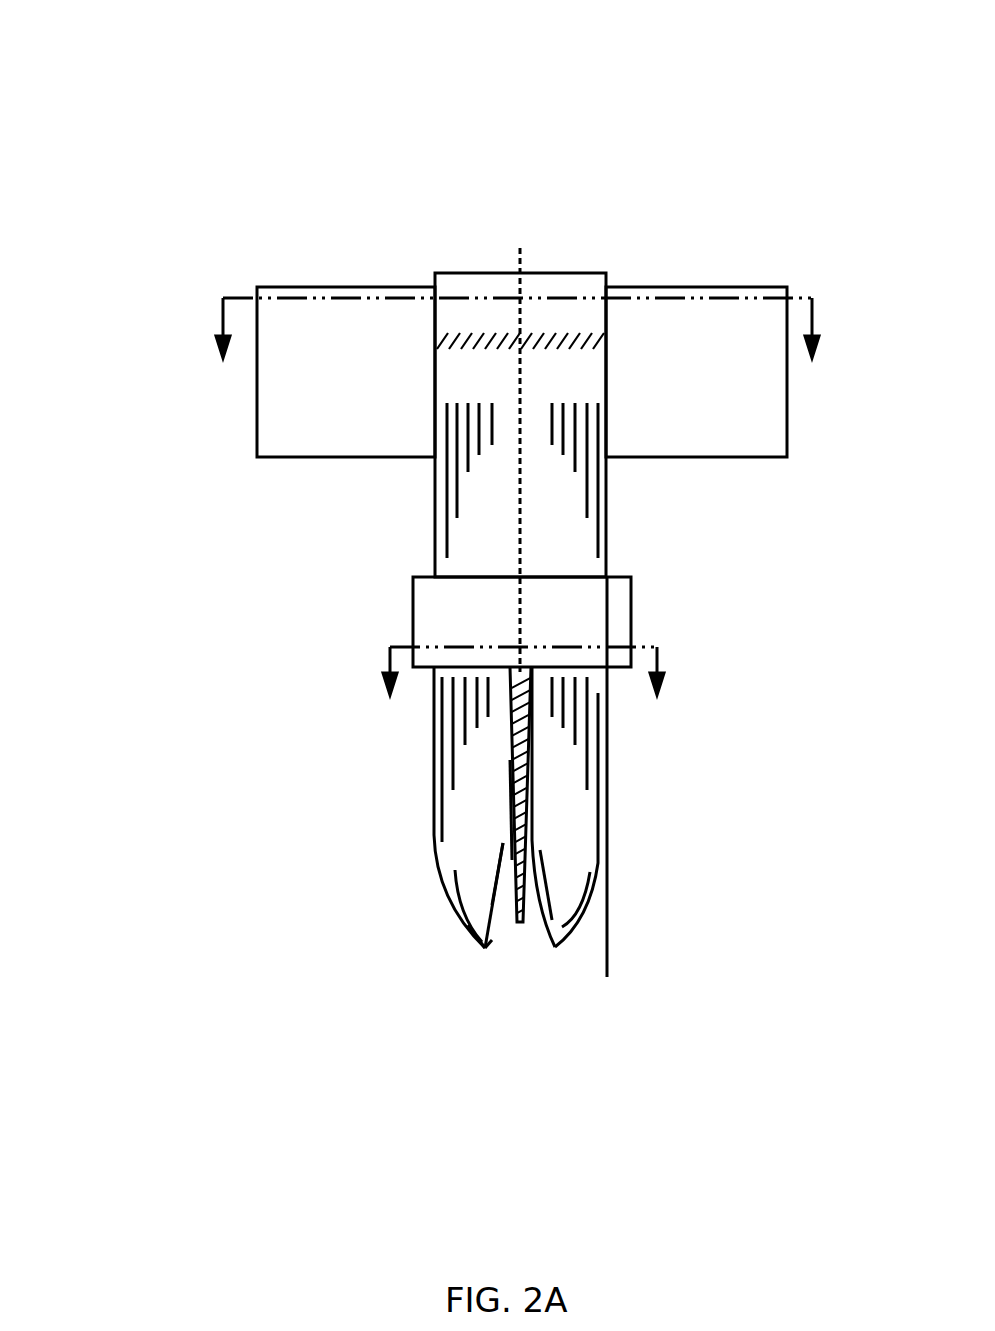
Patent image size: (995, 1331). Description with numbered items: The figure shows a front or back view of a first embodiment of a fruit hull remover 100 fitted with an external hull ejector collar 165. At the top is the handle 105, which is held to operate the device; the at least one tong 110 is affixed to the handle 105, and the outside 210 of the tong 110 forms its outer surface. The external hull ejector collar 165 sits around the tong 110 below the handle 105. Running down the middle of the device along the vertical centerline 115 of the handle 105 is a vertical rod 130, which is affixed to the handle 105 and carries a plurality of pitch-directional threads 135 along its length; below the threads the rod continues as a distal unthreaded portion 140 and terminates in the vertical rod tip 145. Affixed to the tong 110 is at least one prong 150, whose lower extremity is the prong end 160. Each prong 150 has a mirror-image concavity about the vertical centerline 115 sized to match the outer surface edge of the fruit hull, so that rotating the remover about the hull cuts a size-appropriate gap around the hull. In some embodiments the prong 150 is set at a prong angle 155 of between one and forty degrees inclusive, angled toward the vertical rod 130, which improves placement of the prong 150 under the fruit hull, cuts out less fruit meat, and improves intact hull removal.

The fruit hull remover 100 is at (447, 504).
The handle 105 is at (522, 372).
The tong 110 is at (415, 528).
The vertical centerline 115 is at (523, 441).
The vertical rod 130 is at (492, 782).
The pitch-directional threads 135 is at (492, 808).
The distal unthreaded portion 140 is at (496, 887).
The vertical rod tip 145 is at (492, 918).
The prong 150 is at (462, 935).
The prong angle 155 is at (592, 918).
The prong end 160 is at (467, 951).
The external hull ejector collar 165 is at (522, 622).
The outside of the tong 210 is at (629, 528).